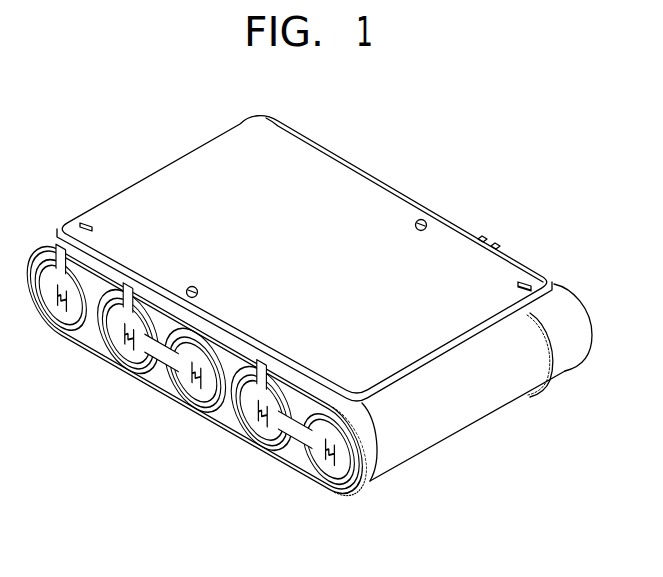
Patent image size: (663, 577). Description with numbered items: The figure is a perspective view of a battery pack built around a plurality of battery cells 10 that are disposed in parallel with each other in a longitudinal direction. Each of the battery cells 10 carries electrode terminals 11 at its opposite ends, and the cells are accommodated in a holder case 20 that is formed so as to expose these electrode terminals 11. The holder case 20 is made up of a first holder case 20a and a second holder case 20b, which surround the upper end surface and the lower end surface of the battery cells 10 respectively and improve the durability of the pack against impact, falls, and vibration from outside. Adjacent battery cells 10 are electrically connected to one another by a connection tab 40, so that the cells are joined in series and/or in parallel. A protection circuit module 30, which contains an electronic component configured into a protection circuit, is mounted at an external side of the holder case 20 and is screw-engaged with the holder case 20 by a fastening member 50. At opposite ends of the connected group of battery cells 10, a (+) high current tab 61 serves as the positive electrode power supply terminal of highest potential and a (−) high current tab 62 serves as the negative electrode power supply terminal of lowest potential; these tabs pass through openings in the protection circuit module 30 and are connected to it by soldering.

The battery cells 10 is at (487, 399).
The electrode terminals 11 is at (77, 338).
The holder case 20 is at (605, 448).
The first holder case 20a is at (375, 480).
The second holder case 20b is at (562, 372).
The protection circuit module 30 is at (342, 175).
The connection tab 40 is at (125, 357).
The fastening member 50 is at (416, 221).
The (+) high current tab 61 is at (527, 282).
The (−) high current tab 62 is at (84, 222).